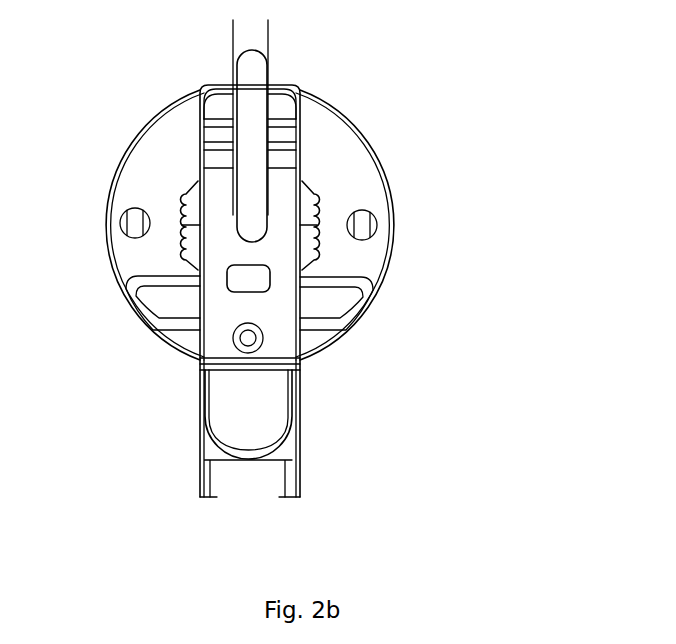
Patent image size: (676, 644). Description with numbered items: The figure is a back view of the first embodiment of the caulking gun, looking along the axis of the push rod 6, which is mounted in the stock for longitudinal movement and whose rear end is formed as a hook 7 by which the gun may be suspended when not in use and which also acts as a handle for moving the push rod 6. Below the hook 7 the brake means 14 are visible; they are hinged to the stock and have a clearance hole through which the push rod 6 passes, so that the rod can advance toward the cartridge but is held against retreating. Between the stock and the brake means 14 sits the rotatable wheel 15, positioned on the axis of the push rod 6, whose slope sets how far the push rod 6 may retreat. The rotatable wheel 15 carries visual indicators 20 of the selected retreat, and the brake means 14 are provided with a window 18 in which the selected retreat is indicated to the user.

The push rod 6 is at (248, 227).
The hook 7 is at (253, 82).
The brake means 14 is at (267, 408).
The rotatable wheel 15 is at (308, 205).
The window 18 is at (270, 278).
The visual indicators 20 is at (227, 288).